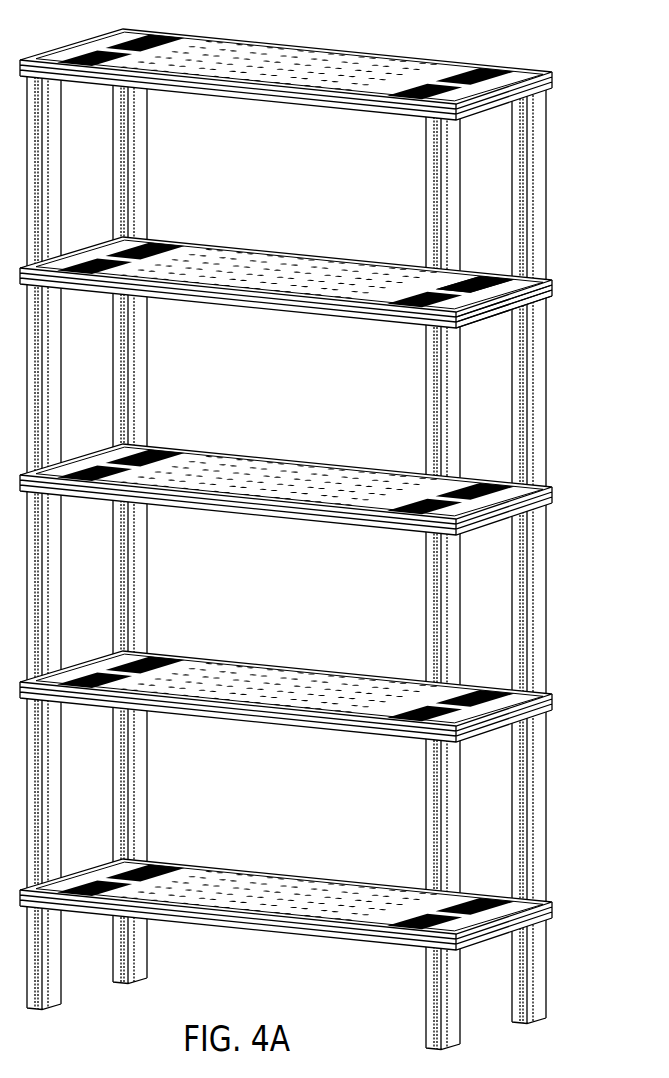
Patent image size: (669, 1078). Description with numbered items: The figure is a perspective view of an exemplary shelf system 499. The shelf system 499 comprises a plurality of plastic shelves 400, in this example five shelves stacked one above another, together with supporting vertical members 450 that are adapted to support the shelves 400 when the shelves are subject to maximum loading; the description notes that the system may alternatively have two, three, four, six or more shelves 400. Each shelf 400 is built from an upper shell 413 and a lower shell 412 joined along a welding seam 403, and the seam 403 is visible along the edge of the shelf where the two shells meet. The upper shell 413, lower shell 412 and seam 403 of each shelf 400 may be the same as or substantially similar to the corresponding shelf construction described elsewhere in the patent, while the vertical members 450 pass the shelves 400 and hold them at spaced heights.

The shelf system 499 is at (341, 525).
The plastic shelf 400 is at (341, 489).
The supporting vertical member 450 is at (543, 580).
The welding seam 403 is at (556, 288).
The upper shell 413 is at (503, 291).
The lower shell 412 is at (502, 316).